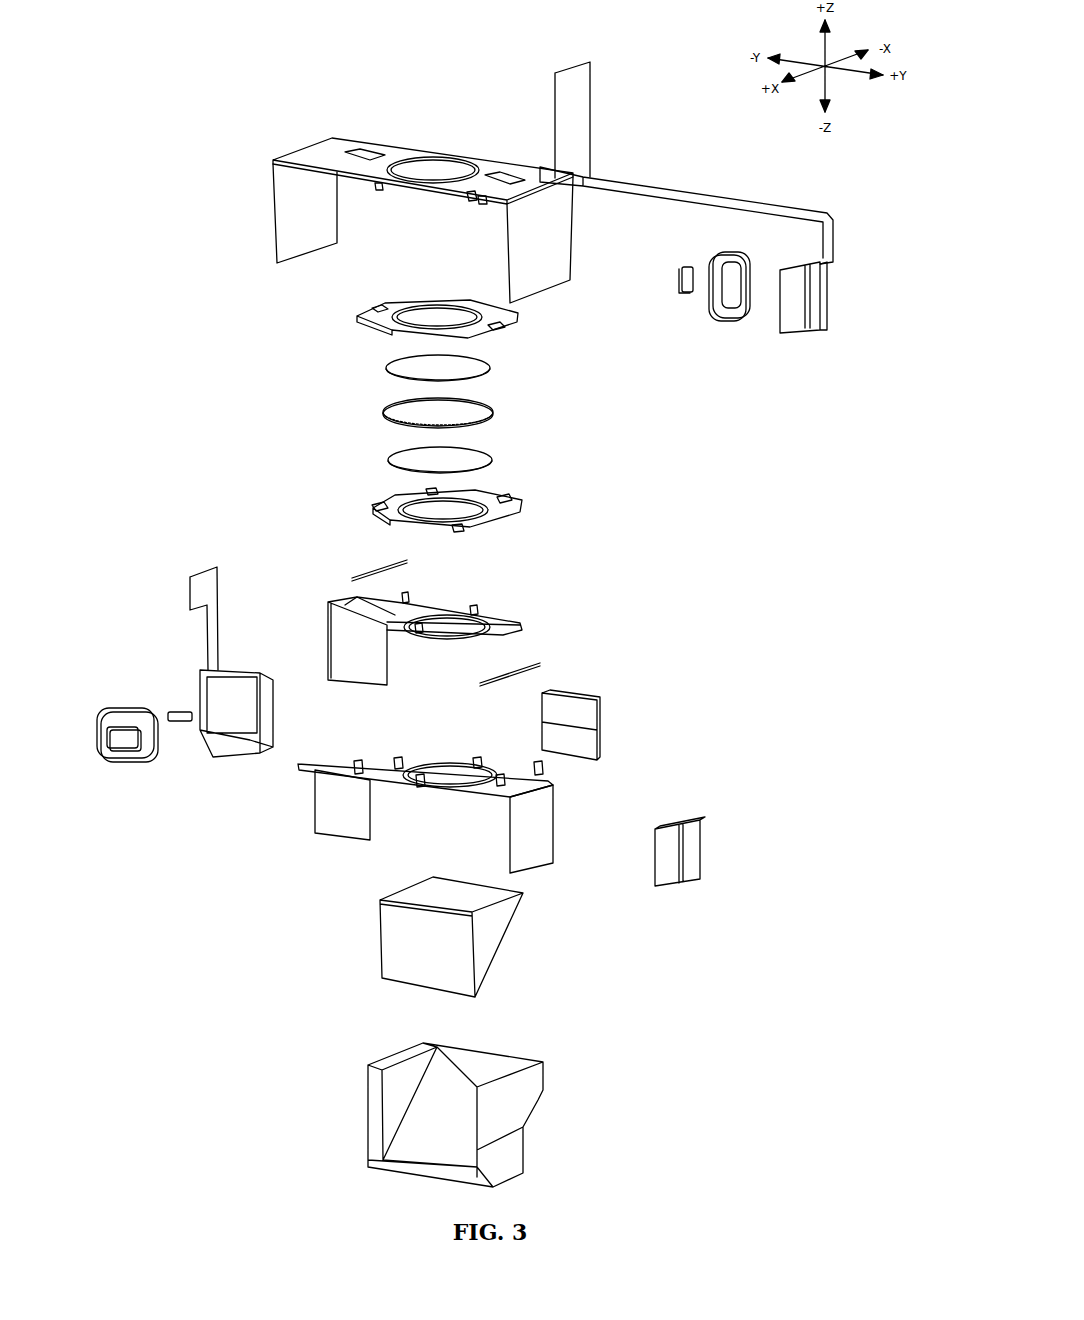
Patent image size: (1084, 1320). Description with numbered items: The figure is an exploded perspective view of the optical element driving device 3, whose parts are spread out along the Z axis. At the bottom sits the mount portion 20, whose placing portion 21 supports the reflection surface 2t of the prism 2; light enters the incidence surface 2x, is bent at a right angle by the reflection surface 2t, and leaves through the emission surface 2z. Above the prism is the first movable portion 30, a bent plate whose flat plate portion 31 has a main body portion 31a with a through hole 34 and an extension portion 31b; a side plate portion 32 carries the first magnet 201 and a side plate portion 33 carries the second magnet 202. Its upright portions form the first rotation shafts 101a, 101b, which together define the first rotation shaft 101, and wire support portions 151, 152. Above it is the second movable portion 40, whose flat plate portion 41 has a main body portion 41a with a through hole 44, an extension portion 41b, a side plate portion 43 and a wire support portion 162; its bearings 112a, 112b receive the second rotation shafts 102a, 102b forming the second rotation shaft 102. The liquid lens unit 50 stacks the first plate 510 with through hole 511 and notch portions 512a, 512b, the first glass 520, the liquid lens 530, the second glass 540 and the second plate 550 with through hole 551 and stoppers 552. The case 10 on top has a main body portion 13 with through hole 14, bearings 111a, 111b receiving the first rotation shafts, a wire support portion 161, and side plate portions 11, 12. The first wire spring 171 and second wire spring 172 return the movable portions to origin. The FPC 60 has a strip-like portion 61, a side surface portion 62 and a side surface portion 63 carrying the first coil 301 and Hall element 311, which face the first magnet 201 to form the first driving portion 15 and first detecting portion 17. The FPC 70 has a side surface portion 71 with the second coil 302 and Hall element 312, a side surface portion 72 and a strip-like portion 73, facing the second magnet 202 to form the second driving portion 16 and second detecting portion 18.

The prism 2 is at (449, 952).
The emission surface 2z is at (430, 880).
The reflection surface 2t is at (495, 955).
The incidence surface 2x is at (428, 963).
The optical element driving device 3 is at (182, 245).
The case 10 is at (423, 195).
The side plate portion 11 is at (277, 232).
The side plate portion 12 is at (548, 235).
The main body portion 13 is at (493, 172).
The through hole 14 is at (440, 168).
The first driving portion 15 is at (775, 785).
The second driving portion 16 is at (125, 769).
The first detecting portion 17 is at (750, 790).
The second detecting portion 18 is at (171, 771).
The mount portion 20 is at (487, 1102).
The placing portion 21 is at (470, 1075).
The first movable portion 30 is at (381, 781).
The flat plate portion 31 is at (388, 760).
The main body portion 31a is at (488, 788).
The extension portion 31b is at (332, 765).
The side plate portion 32 is at (540, 828).
The side plate portion 33 is at (330, 825).
The through hole 34 is at (437, 768).
The second movable portion 40 is at (445, 602).
The flat plate portion 41 is at (400, 595).
The main body portion 41a is at (518, 626).
The extension portion 41b is at (355, 598).
The side plate portion 43 is at (345, 662).
The through hole 44 is at (443, 624).
The liquid lens unit 50 is at (466, 402).
The FPC 60 is at (711, 215).
The strip-like portion 61 is at (700, 198).
The side surface portion 62 is at (578, 100).
The side surface portion 63 is at (797, 300).
The FPC 70 is at (194, 645).
The side surface portion 71 is at (222, 735).
The side surface portion 72 is at (202, 595).
The strip-like portion 73 is at (208, 638).
The first rotation shaft 101 is at (443, 739).
The first rotation shaft 101a is at (398, 758).
The first rotation shaft 101b is at (500, 775).
The second rotation shaft 102 is at (435, 771).
The second rotation shaft 102a is at (420, 787).
The second rotation shaft 102b is at (477, 758).
The bearing 111a is at (379, 190).
The bearing 111b is at (485, 204).
The bearing 112a is at (418, 633).
The bearing 112b is at (475, 606).
The wire support portion 151 is at (543, 768).
The wire support portion 152 is at (357, 762).
The wire support portion 161 is at (469, 200).
The wire support portion 162 is at (407, 592).
The first wire spring 171 is at (552, 659).
The second wire spring 172 is at (385, 568).
The first magnet 201 is at (700, 818).
The second magnet 202 is at (595, 697).
The first coil 301 is at (737, 320).
The second coil 302 is at (125, 758).
The Hall element 311 is at (688, 293).
The Hall element 312 is at (180, 722).
The first plate 510 is at (460, 309).
The through hole 511 is at (445, 312).
The notch portion 512a is at (380, 307).
The notch portion 512b is at (497, 328).
The first glass 520 is at (488, 370).
The liquid lens 530 is at (492, 413).
The second glass 540 is at (492, 461).
The second plate 550 is at (496, 492).
The through hole 551 is at (440, 492).
The stopper 552 is at (430, 490).